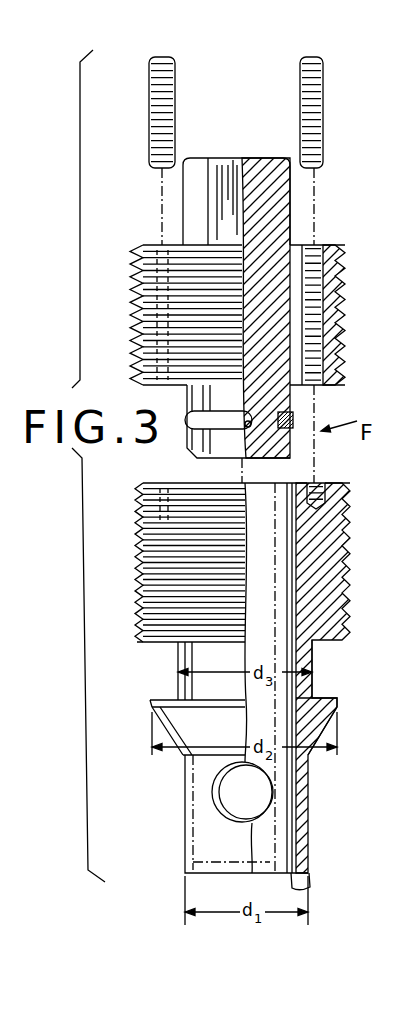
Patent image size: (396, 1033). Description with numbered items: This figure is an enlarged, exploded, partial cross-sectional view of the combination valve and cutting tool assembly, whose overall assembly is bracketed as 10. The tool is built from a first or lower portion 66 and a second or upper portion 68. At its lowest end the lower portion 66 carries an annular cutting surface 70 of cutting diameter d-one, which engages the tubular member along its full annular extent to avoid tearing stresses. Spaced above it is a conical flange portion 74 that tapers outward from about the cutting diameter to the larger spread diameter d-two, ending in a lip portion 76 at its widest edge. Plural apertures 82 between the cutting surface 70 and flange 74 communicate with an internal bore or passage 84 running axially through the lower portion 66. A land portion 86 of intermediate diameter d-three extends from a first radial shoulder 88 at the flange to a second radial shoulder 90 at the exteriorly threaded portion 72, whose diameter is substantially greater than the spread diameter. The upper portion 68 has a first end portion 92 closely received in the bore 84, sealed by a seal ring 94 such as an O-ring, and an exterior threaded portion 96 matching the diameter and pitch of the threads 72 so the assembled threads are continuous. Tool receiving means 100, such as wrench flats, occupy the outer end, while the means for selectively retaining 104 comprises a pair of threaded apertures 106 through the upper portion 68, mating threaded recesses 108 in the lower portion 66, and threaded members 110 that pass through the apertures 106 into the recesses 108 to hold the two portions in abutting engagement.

The fastener assembly 10 is at (52, 466).
The first or lower portion 66 is at (243, 683).
The second or upper portion 68 is at (239, 298).
The annular cutting surface 70 is at (290, 887).
The exteriorly threaded portion 72 is at (343, 540).
The conical flange portion 74 is at (323, 730).
The lip portion 76 is at (160, 707).
The plural apertures 82 is at (308, 813).
The internal bore or passage 84 is at (318, 697).
The land portion 86 is at (312, 658).
The first radial shoulder 88 is at (155, 702).
The second radial shoulder 90 is at (157, 645).
The first end portion 92 is at (280, 447).
The seal ring 94 is at (293, 420).
The exterior threaded portion 96 is at (343, 263).
The tool receiving means 100 is at (197, 192).
The means for selectively retaining 104 is at (237, 270).
The threaded apertures 106 is at (163, 241).
The threaded recesses 108 is at (160, 483).
The threaded members 110 is at (152, 92).